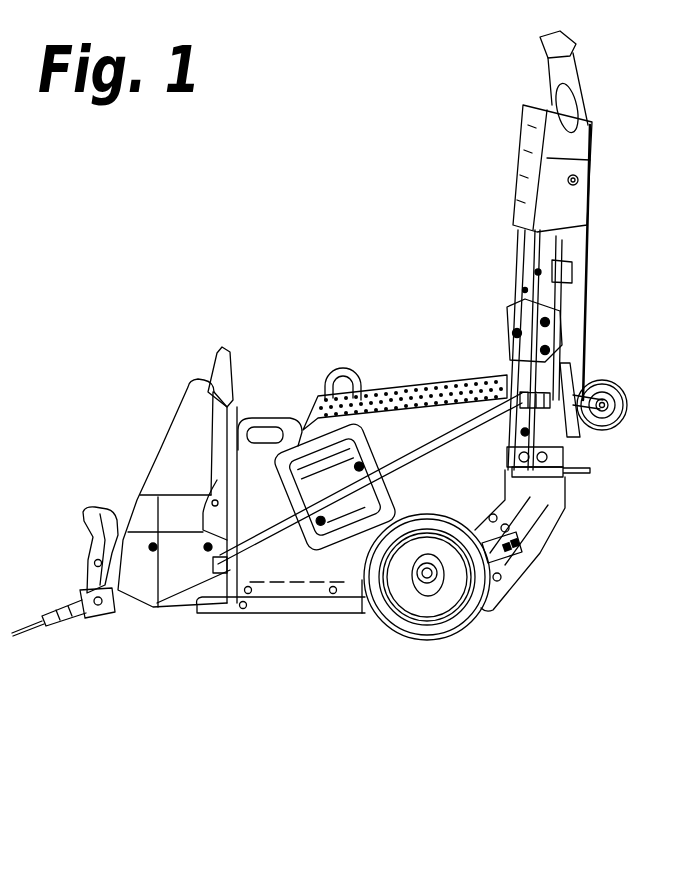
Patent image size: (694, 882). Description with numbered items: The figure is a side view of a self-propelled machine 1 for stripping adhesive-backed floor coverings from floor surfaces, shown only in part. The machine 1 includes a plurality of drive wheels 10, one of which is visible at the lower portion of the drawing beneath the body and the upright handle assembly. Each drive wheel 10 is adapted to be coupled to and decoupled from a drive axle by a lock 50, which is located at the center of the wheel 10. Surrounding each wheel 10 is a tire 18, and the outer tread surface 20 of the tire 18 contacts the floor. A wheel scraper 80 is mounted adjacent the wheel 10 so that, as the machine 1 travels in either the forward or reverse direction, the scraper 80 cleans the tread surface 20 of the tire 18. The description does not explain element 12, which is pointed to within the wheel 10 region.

The self-propelled machine 1 is at (366, 347).
The drive wheel 10 is at (392, 647).
The wheel disc 12 is at (445, 603).
The tire 18 is at (413, 628).
The tread surface 20 is at (428, 637).
The lock 50 is at (405, 583).
The wheel scraper 80 is at (533, 554).